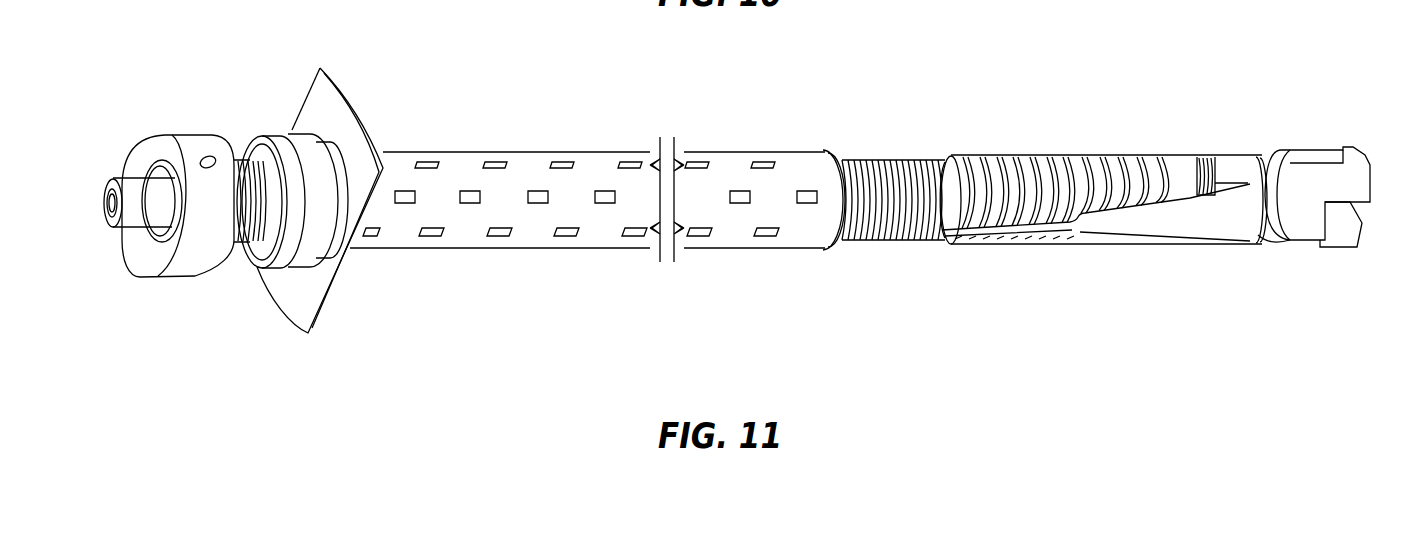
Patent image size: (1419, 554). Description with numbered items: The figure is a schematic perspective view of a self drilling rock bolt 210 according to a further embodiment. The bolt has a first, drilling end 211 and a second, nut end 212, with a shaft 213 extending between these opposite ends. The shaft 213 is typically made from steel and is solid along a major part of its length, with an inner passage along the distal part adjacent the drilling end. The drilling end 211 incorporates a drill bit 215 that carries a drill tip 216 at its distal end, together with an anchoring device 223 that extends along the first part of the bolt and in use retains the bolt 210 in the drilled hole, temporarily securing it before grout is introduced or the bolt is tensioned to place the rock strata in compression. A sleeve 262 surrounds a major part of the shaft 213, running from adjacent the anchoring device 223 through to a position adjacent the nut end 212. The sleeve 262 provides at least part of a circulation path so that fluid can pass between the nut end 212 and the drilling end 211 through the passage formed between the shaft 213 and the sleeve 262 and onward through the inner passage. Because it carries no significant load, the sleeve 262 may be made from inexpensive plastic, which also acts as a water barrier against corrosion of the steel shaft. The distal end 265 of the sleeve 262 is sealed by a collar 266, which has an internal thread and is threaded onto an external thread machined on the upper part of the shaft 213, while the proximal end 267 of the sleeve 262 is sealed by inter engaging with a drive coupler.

The self drilling rock bolt 210 is at (822, 86).
The first (drilling) end 211 is at (1304, 292).
The second (nut) end 212 is at (183, 100).
The shaft 213 is at (895, 234).
The drill bit 215 is at (1291, 236).
The drill tip 216 is at (1393, 244).
The anchoring device 223 is at (1120, 117).
The sleeve 262 is at (535, 158).
The distal end of the sleeve 265 is at (808, 238).
The collar 266 is at (837, 152).
The proximal end of the sleeve 267 is at (363, 240).